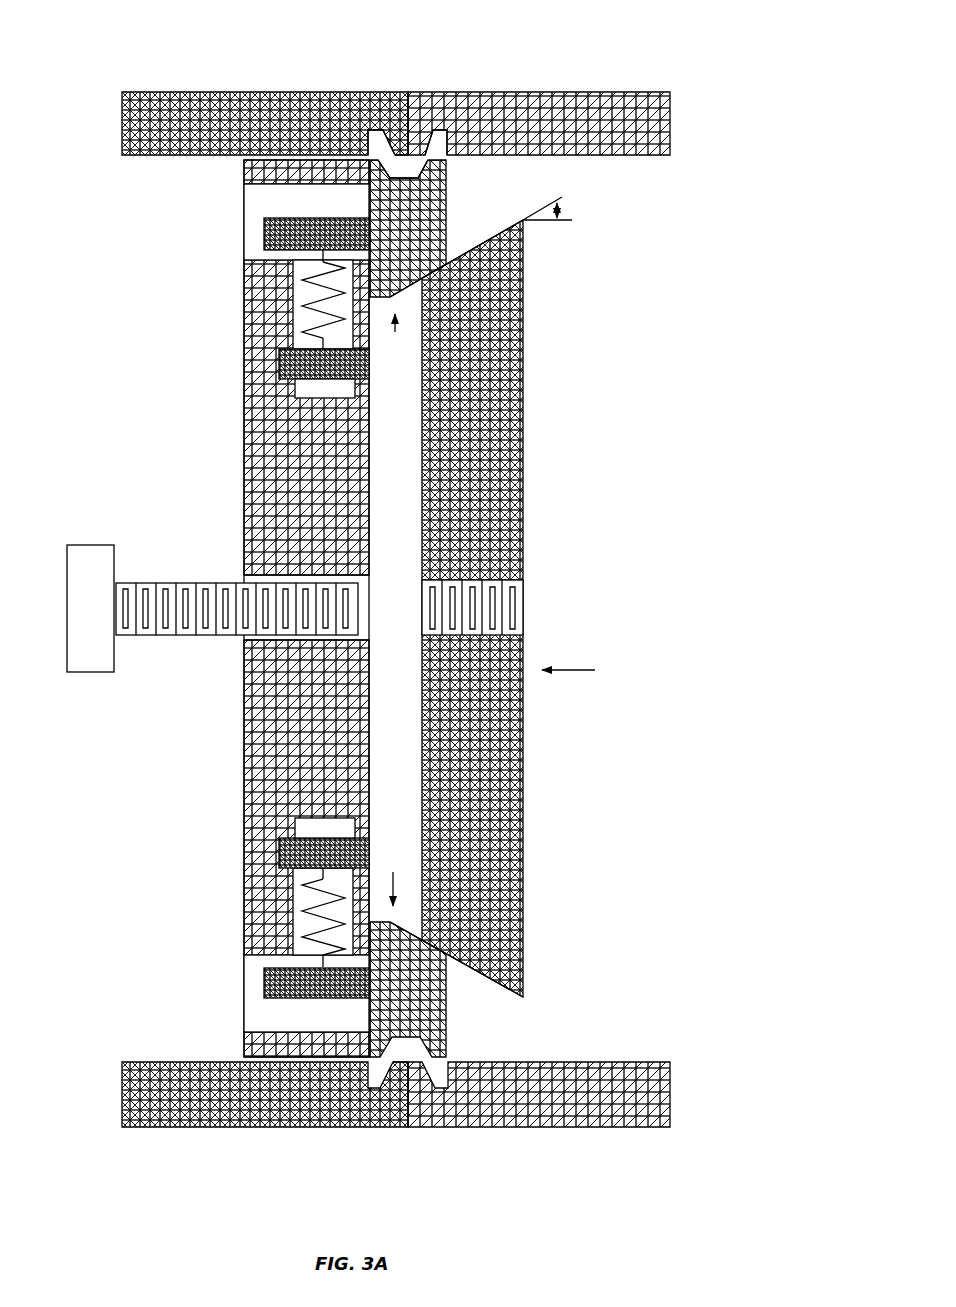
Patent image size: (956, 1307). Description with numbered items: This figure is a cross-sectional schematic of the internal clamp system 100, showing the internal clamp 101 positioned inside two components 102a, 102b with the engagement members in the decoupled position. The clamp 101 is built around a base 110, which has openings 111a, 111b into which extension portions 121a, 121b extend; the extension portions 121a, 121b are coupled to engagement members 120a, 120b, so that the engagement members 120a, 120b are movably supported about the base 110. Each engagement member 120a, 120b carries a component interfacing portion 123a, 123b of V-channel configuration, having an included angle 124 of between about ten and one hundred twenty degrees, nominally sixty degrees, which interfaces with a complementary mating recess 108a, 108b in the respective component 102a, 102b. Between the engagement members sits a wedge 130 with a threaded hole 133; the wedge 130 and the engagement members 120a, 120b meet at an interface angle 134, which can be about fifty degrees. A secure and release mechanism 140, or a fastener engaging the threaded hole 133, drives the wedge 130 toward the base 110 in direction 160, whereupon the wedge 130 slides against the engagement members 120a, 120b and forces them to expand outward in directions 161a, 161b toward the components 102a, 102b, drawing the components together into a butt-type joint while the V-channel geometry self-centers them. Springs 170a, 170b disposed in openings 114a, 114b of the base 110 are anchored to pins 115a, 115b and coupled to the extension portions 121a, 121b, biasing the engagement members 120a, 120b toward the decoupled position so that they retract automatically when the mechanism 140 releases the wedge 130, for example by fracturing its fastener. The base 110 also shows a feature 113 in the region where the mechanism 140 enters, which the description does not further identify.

The internal clamp system 100 is at (110, 42).
The internal clamp 101 is at (180, 290).
The first component 102a is at (188, 92).
The second component 102b is at (584, 92).
The mating recess 108a is at (368, 134).
The mating recess 108b is at (448, 130).
The base 110 is at (244, 512).
The opening 111a is at (258, 198).
The opening 111b is at (258, 1013).
The threaded bore 113 is at (360, 578).
The opening 114a is at (307, 335).
The opening 114b is at (307, 881).
The pin 115a is at (330, 380).
The pin 115b is at (307, 838).
The engagement member 120a is at (446, 200).
The engagement member 120b is at (446, 1018).
The extension portion 121a is at (264, 233).
The extension portion 121b is at (264, 977).
The component interfacing portion 123a is at (390, 155).
The component interfacing portion 123b is at (392, 1061).
The included angle 124 is at (392, 172).
The wedge 130 is at (524, 458).
The threaded hole 133 is at (512, 582).
The interface angle 134 is at (562, 210).
The secure and release mechanism 140 is at (165, 636).
The direction 160 is at (572, 672).
The direction 161a is at (400, 331).
The direction 161b is at (397, 882).
The spring 170a is at (302, 305).
The spring 170b is at (302, 900).